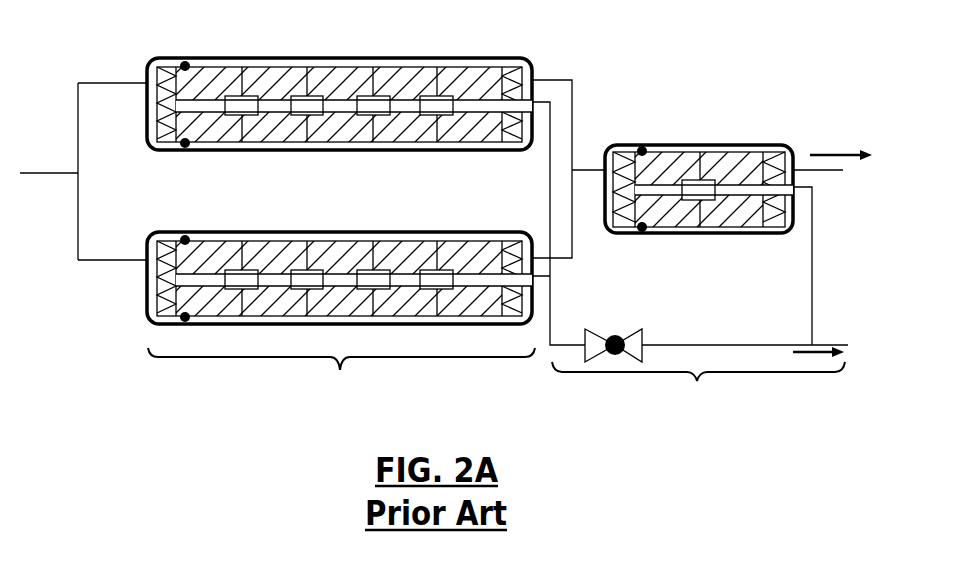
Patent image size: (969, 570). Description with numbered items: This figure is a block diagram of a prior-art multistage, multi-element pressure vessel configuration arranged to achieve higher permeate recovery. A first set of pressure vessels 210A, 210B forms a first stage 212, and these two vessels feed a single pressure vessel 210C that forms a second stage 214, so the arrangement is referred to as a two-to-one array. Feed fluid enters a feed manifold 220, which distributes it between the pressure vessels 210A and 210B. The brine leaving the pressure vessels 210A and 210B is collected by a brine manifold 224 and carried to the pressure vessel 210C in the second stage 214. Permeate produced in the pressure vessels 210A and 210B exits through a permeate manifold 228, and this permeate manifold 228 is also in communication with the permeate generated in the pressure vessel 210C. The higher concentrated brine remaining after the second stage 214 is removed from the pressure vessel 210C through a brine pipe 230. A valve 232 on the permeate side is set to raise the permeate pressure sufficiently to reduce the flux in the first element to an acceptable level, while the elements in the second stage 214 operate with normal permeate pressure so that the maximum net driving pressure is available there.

The pressure vessel 210A is at (250, 58).
The pressure vessel 210B is at (222, 234).
The pressure vessel 210C is at (667, 145).
The first stage 212 is at (341, 374).
The second stage 214 is at (700, 300).
The feed manifold 220 is at (78, 127).
The brine manifold 224 is at (550, 80).
The permeate manifold 228 is at (550, 169).
The brine pipe 230 is at (800, 170).
The valve 232 is at (617, 333).